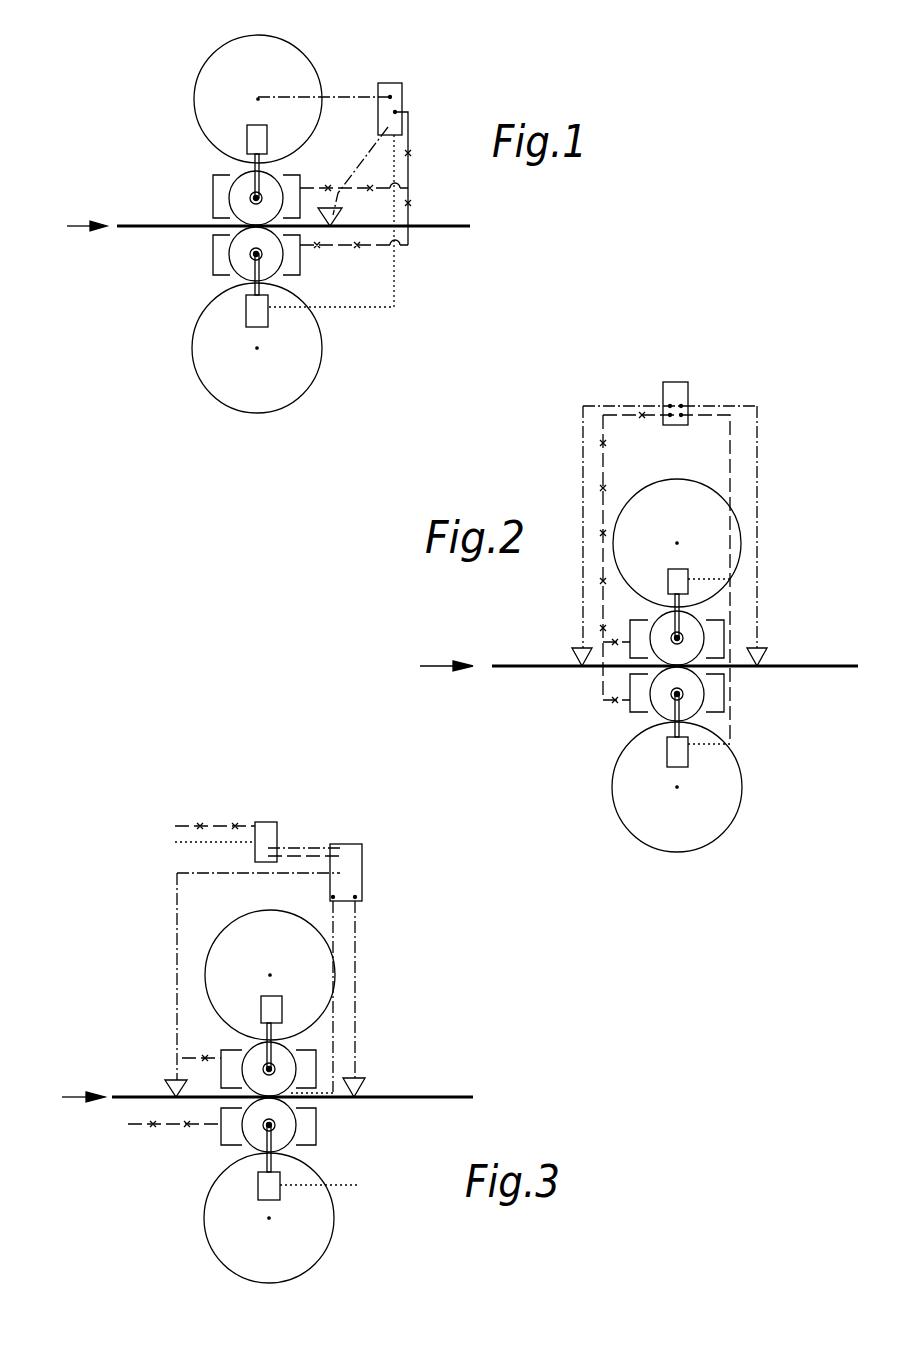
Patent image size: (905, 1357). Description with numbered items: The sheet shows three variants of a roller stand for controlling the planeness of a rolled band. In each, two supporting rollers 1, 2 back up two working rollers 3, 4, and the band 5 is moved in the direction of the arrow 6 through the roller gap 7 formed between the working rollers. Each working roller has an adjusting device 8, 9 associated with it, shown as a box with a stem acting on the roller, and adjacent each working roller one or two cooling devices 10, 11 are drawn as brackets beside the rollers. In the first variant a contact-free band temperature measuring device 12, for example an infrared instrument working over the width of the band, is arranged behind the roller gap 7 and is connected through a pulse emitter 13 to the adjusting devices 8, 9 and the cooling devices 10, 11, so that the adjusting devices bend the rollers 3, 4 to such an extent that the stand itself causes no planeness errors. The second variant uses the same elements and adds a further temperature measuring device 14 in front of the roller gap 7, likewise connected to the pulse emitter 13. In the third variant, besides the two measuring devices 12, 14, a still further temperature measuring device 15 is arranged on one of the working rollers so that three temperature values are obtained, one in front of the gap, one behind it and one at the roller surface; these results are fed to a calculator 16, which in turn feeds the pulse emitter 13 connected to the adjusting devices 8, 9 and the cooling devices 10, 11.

In FIG. 1, the supporting roller 1 is at (220, 68).
In FIG. 2, the supporting roller 1 is at (650, 492).
In FIG. 3, the supporting roller 1 is at (232, 955).
In FIG. 1, the supporting roller 2 is at (218, 390).
In FIG. 2, the supporting roller 2 is at (728, 800).
In FIG. 3, the supporting roller 2 is at (315, 1220).
In FIG. 1, the working roller 3 is at (243, 182).
In FIG. 2, the working roller 3 is at (693, 617).
In FIG. 3, the working roller 3 is at (253, 1055).
In FIG. 1, the working roller 4 is at (245, 270).
In FIG. 2, the working roller 4 is at (688, 708).
In FIG. 3, the working roller 4 is at (258, 1138).
In FIG. 1, the band 5 is at (158, 224).
In FIG. 2, the band 5 is at (828, 668).
In FIG. 3, the band 5 is at (445, 1095).
In FIG. 1, the arrow 6 is at (72, 228).
In FIG. 2, the arrow 6 is at (441, 668).
In FIG. 3, the arrow 6 is at (70, 1100).
In FIG. 1, the roller gap 7 is at (232, 233).
In FIG. 3, the roller gap 7 is at (243, 1095).
In FIG. 1, the adjusting device 8 is at (250, 137).
In FIG. 2, the adjusting device 8 is at (668, 572).
In FIG. 1, the adjusting device 9 is at (250, 322).
In FIG. 2, the adjusting device 9 is at (668, 753).
In FIG. 1, the cooling device 10 is at (300, 178).
In FIG. 2, the cooling device 10 is at (630, 625).
In FIG. 1, the cooling device 11 is at (303, 270).
In FIG. 2, the cooling device 11 is at (630, 685).
In FIG. 1, the band temperature measuring device 12 is at (338, 217).
In FIG. 2, the band temperature measuring device 12 is at (768, 655).
In FIG. 3, the band temperature measuring device 12 is at (360, 1072).
In FIG. 1, the pulse emitter 13 is at (402, 100).
In FIG. 2, the pulse emitter 13 is at (672, 382).
In FIG. 3, the pulse emitter 13 is at (270, 828).
In FIG. 2, the temperature measuring device 14 is at (575, 652).
In FIG. 3, the temperature measuring device 14 is at (167, 1085).
In FIG. 3, the temperature measuring device 15 is at (293, 1098).
In FIG. 3, the calculator 16 is at (352, 848).